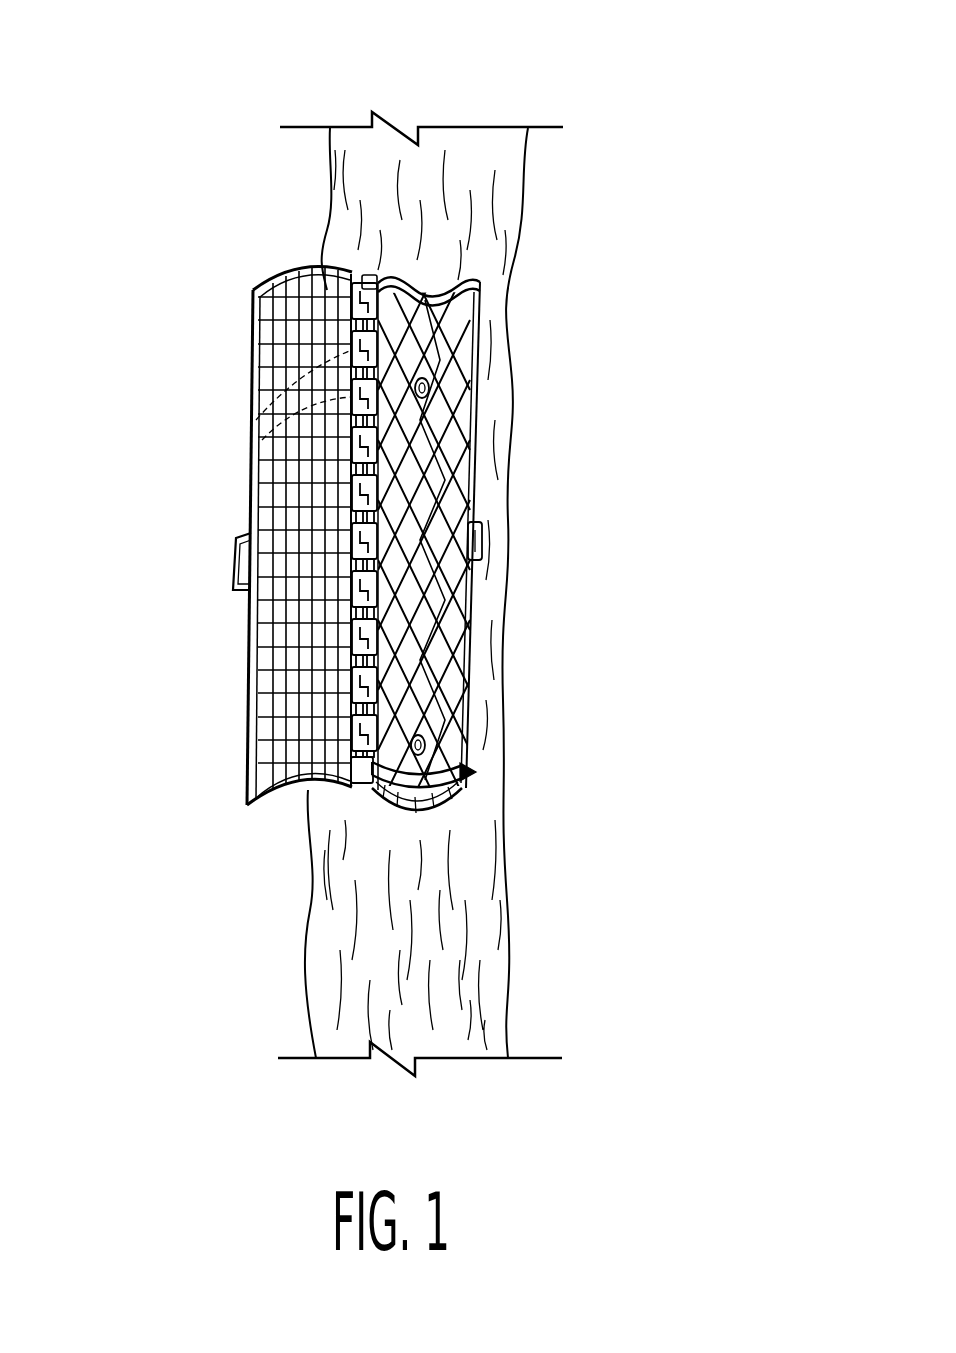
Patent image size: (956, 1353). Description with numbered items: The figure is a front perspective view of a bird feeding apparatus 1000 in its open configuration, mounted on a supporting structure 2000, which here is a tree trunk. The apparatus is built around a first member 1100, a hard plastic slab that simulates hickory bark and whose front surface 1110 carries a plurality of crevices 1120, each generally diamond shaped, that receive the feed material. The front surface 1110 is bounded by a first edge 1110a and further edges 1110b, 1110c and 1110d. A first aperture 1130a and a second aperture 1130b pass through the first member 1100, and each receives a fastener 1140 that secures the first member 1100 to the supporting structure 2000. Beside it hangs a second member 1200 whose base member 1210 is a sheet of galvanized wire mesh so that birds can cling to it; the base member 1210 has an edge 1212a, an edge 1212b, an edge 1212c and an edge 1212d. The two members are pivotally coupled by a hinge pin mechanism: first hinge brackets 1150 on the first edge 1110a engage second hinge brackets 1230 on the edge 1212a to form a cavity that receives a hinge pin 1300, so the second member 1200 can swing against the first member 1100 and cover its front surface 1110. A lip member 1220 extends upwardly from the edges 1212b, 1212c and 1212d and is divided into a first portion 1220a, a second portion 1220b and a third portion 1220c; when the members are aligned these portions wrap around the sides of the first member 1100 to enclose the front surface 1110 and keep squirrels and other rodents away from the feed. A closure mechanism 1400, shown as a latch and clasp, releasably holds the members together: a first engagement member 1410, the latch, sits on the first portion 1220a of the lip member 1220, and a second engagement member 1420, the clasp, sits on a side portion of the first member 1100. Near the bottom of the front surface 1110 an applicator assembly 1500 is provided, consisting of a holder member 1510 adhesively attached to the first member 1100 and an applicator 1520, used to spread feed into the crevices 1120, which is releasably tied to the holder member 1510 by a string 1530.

The bird feeding apparatus 1000 is at (261, 246).
The supporting structure 2000 is at (534, 172).
The first member 1100 is at (502, 603).
The front surface 1110 is at (494, 535).
The first edge 1110a is at (443, 290).
The edge 1110b is at (405, 300).
The edge 1110c is at (463, 640).
The edge 1110d is at (373, 282).
The plurality of crevices 1120 is at (472, 310).
The first aperture 1130a is at (430, 392).
The second aperture 1130b is at (430, 748).
The fastener 1140 is at (445, 425).
The first hinge brackets 1150 is at (470, 500).
The second member 1200 is at (221, 506).
The base member 1210 is at (246, 690).
The edge 1212a is at (323, 262).
The edge 1212b is at (265, 256).
The edge 1212c is at (245, 752).
The edge 1212d is at (256, 803).
The lip member 1220 is at (267, 280).
The first portion 1220a is at (246, 493).
The second portion 1220b is at (308, 258).
The third portion 1220c is at (310, 800).
The second hinge brackets 1230 is at (256, 420).
The hinge pin 1300 is at (374, 276).
The closure mechanism 1400 is at (341, 601).
The first engagement member 1410 is at (243, 592).
The second engagement member 1420 is at (482, 545).
The applicator assembly 1500 is at (419, 874).
The holder member 1510 is at (422, 792).
The applicator 1520 is at (478, 765).
The string 1530 is at (385, 794).